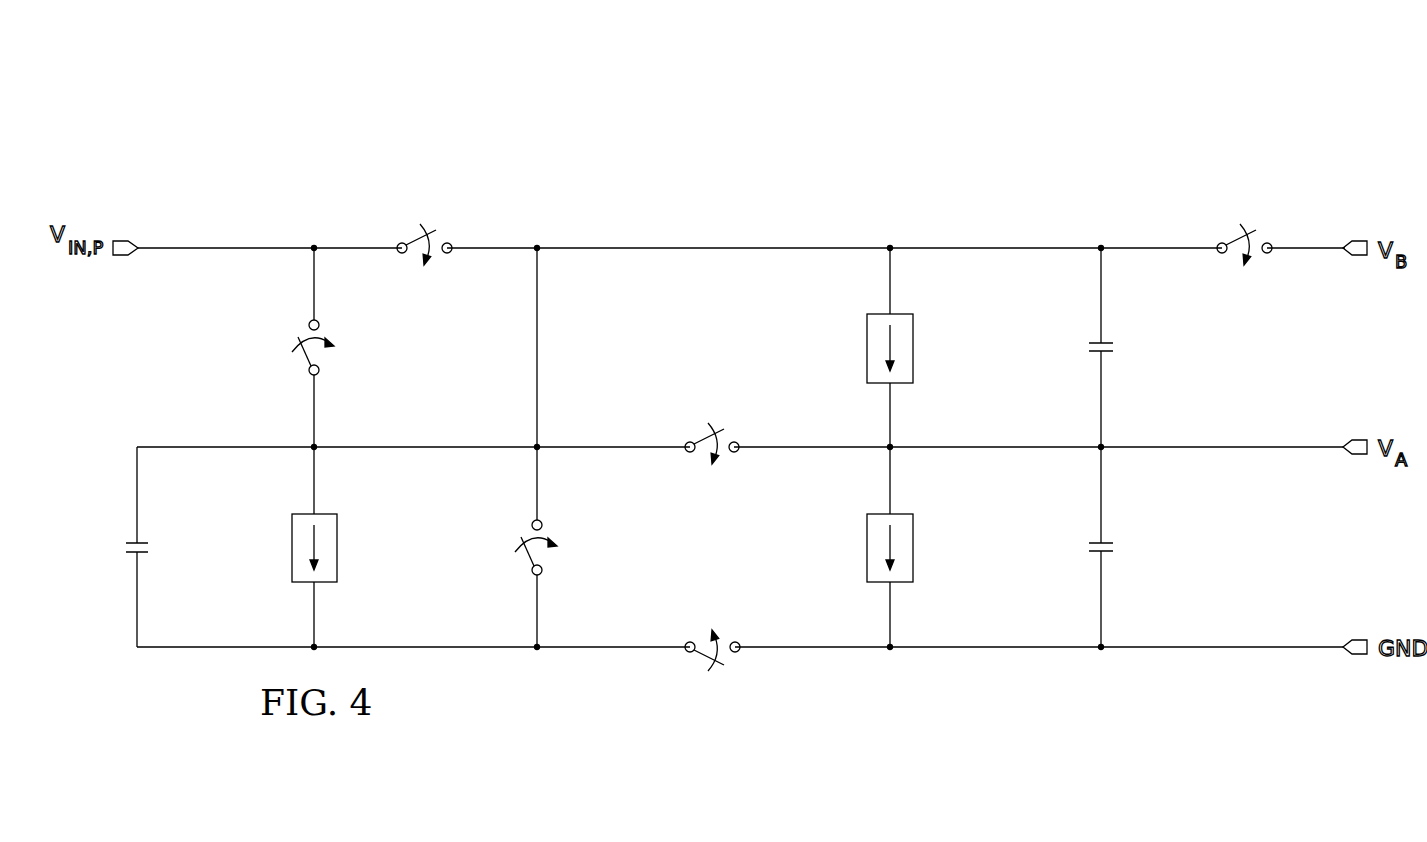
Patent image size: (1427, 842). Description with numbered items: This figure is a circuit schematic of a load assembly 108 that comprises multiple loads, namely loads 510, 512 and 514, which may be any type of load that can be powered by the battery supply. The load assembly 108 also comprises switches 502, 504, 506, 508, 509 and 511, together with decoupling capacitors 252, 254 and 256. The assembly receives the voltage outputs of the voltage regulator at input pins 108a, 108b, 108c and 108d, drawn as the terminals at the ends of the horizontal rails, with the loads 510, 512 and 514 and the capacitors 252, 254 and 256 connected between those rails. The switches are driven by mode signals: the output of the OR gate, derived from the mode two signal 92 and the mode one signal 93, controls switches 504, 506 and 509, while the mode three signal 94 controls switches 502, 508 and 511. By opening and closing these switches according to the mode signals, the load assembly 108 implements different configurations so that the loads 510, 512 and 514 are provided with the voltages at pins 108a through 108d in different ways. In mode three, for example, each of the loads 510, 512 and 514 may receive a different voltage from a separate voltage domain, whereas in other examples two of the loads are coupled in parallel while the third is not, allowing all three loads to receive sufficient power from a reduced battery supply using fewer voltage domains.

The input pin 108a is at (122, 242).
The input pin 108b is at (1362, 242).
The input pin 108c is at (1360, 453).
The input pin 108d is at (1360, 653).
The load assembly 108 is at (1267, 230).
The mode 2 signal 92 is at (626, 450).
The mode 1 signal 93 is at (447, 230).
The mode 3 signal 94 is at (337, 357).
The switch 502 is at (305, 353).
The switch 504 is at (414, 243).
The switch 506 is at (702, 442).
The switch 508 is at (528, 553).
The switch 509 is at (704, 652).
The switch 511 is at (1234, 243).
The load 510 is at (340, 550).
The load 512 is at (916, 350).
The load 514 is at (916, 550).
The decoupling capacitor 252 is at (1116, 550).
The decoupling capacitor 254 is at (1116, 350).
The decoupling capacitor 256 is at (124, 548).